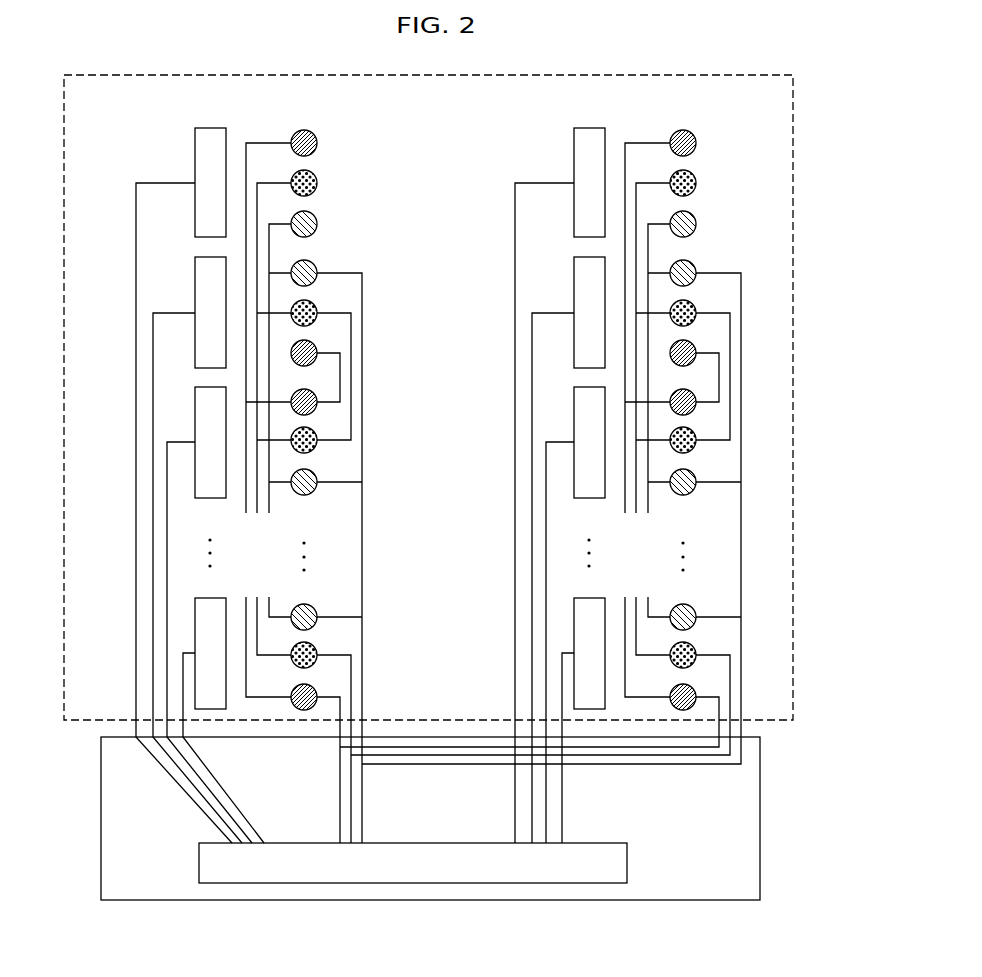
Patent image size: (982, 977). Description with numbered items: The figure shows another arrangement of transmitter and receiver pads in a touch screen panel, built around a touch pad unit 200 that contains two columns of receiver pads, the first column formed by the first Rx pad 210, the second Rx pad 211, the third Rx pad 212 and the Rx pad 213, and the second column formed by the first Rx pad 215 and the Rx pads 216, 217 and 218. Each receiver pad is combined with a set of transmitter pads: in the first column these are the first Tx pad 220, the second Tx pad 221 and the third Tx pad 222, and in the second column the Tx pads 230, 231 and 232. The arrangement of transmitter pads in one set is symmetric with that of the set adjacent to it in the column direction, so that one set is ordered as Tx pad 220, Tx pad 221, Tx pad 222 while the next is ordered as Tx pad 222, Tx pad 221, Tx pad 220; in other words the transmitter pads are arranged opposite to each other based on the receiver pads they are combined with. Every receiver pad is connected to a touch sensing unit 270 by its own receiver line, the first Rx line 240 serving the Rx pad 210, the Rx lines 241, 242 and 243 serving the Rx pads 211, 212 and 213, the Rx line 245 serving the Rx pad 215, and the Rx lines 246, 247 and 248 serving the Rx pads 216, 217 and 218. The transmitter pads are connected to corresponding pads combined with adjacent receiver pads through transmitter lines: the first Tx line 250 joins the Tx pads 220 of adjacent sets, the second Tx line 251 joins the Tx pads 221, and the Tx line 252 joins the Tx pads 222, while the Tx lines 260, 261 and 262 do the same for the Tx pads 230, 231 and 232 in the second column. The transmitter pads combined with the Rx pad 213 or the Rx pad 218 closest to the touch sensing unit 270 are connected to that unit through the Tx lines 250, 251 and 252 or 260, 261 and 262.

The touch pad unit 200 is at (793, 158).
The (1-1)th Rx pad 210 is at (200, 128).
The (1-2)th Rx pad 211 is at (200, 257).
The (1-3)th Rx pad 212 is at (200, 387).
The Rx pad 213 is at (213, 598).
The (2-1)th Rx pad 215 is at (580, 128).
The Rx pad 216 is at (580, 257).
The Rx pad 217 is at (580, 387).
The Rx pad 218 is at (592, 598).
The (1-1)th Tx pad 220 is at (317, 143).
The (1-2)th Tx pad 221 is at (317, 183).
The (1-3)th Tx pad 222 is at (317, 224).
The Tx pad 230 is at (696, 143).
The Tx pad 231 is at (696, 183).
The Tx pad 232 is at (696, 224).
The (1-1)th Rx line 240 is at (136, 255).
The Rx line 241 is at (153, 398).
The Rx line 242 is at (167, 503).
The Rx line 243 is at (183, 703).
The (2-1)th Rx line 245 is at (547, 183).
The Rx line 246 is at (532, 364).
The Rx line 247 is at (546, 492).
The Rx line 248 is at (562, 675).
The (1-1)th Tx line 250 is at (267, 142).
The (1-2)th Tx line 251 is at (275, 181).
The Tx line 252 is at (282, 223).
The Tx line 260 is at (646, 142).
The Tx line 261 is at (655, 181).
The Tx line 262 is at (662, 223).
The touch sensing unit 270 is at (275, 883).